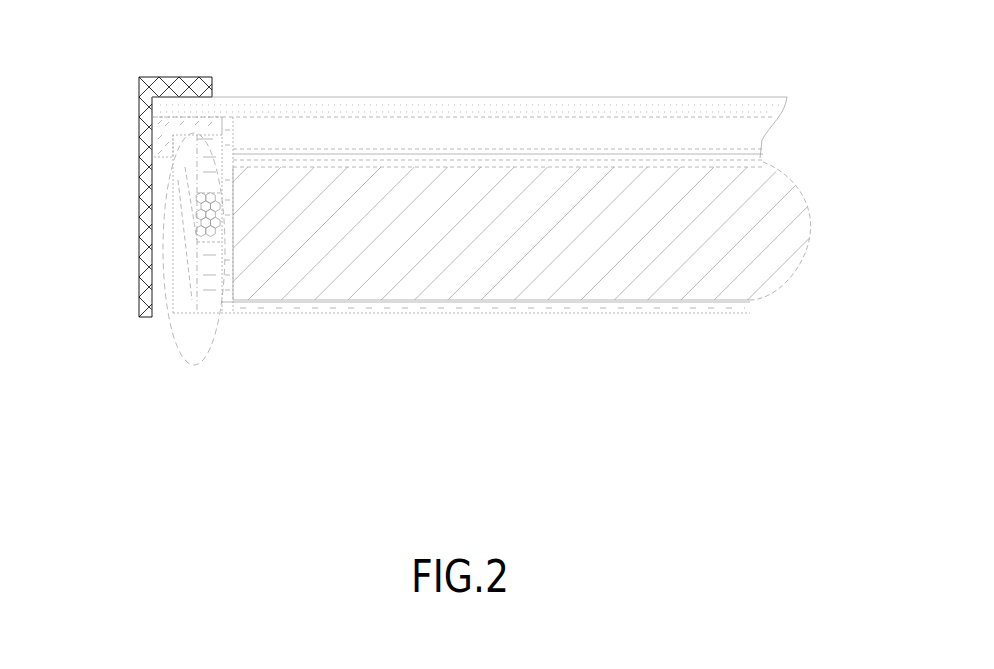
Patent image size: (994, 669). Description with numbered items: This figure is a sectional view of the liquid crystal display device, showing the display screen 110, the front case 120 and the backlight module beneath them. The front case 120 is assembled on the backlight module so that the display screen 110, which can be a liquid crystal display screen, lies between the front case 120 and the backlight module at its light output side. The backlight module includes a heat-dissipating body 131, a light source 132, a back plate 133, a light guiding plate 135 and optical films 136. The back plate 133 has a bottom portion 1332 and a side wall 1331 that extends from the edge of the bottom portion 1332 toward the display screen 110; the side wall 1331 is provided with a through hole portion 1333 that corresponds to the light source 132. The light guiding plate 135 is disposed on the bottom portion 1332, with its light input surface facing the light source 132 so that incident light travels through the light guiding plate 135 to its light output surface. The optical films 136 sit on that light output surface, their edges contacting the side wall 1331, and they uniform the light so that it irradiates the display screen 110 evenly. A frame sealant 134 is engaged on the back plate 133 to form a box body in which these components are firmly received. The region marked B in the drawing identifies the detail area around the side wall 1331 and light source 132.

The display screen 110 is at (690, 98).
The front case 120 is at (190, 82).
The heat-dissipating body 131 is at (165, 305).
The light source 132 is at (190, 204).
The back plate 133 is at (397, 400).
The frame sealant 134 is at (197, 128).
The light guiding plate 135 is at (788, 222).
The optical films 136 is at (763, 150).
The side wall 1331 is at (217, 313).
The bottom portion 1332 is at (355, 312).
The through hole portion 1333 is at (200, 194).
The detail region B is at (194, 249).